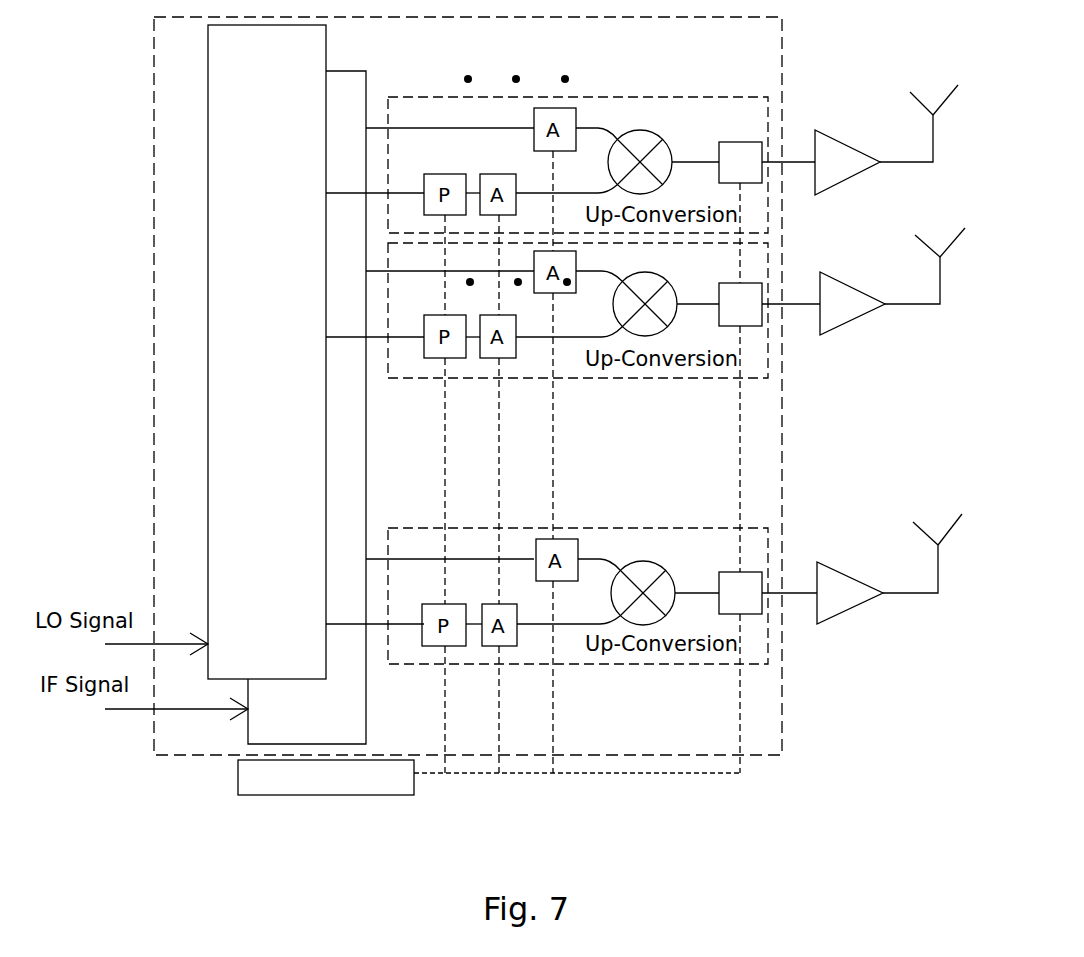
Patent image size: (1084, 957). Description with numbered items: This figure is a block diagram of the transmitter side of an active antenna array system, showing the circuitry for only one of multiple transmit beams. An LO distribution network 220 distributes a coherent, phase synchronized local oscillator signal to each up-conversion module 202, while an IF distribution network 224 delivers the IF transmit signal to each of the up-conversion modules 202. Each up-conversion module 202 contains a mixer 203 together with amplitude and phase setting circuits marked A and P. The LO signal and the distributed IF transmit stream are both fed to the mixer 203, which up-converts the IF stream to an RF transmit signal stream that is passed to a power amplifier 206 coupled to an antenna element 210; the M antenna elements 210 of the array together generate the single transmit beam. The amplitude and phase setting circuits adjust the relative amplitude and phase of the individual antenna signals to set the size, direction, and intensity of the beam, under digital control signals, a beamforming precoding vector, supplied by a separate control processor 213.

The LO distribution network 220 is at (265, 73).
The IF distribution network 224 is at (367, 82).
The mixer 203 is at (633, 132).
The up-conversion module 202 is at (727, 136).
The power amplifier 206 is at (830, 184).
The antenna element 210 is at (931, 123).
The control processor 213 is at (238, 778).